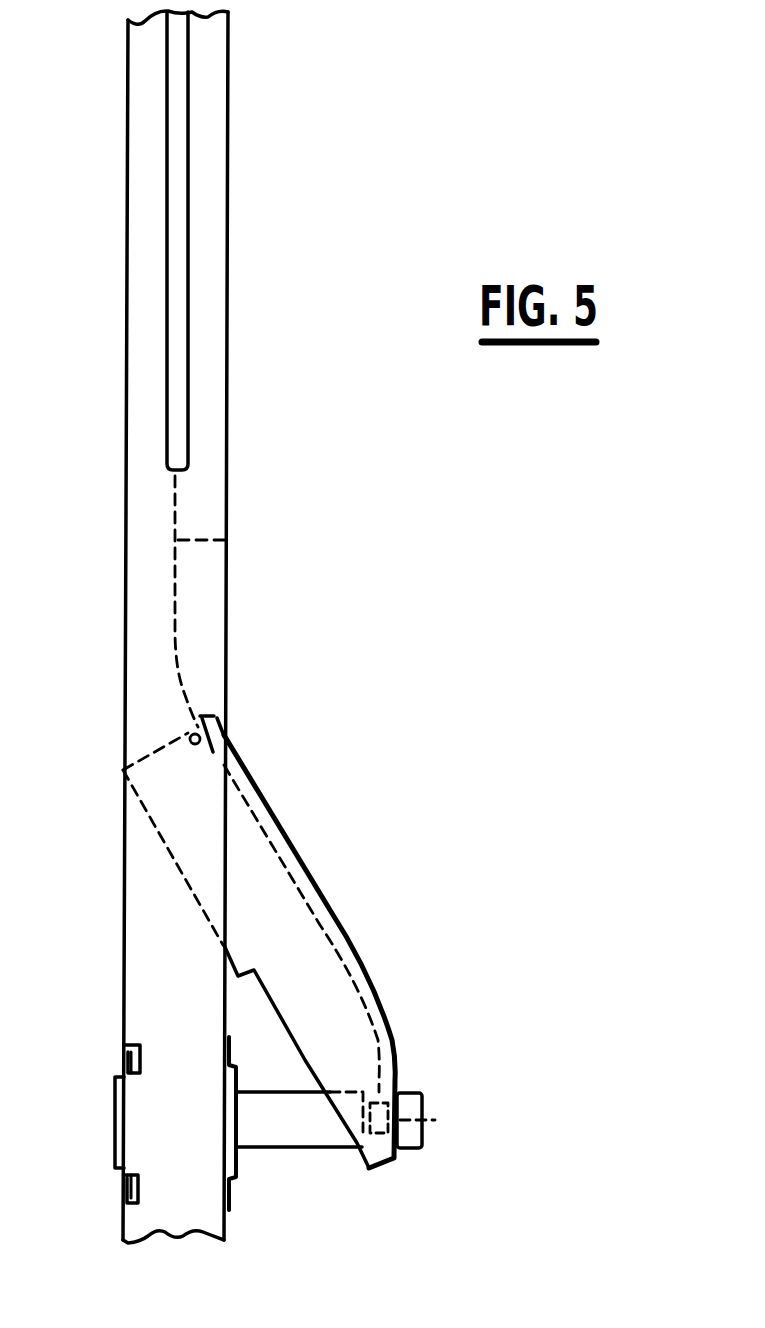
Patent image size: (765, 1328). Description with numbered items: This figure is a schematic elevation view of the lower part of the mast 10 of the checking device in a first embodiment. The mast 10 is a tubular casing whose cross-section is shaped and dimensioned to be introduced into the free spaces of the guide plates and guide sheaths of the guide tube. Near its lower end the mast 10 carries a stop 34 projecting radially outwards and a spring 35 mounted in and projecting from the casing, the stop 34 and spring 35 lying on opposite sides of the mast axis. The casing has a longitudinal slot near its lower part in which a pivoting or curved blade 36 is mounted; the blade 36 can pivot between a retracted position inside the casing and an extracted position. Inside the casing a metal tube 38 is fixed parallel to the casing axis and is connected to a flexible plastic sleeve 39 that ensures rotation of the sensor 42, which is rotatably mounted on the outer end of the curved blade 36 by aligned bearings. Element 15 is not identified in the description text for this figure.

The mast 10 is at (207, 673).
The metal tube 38 is at (175, 322).
The flexible plastic sleeve 39 is at (225, 540).
The curved blade 36 is at (287, 905).
The spring 35 is at (115, 1125).
The stop 34 is at (238, 1134).
The support arm 15 is at (298, 1127).
The sensor 42 is at (430, 1120).